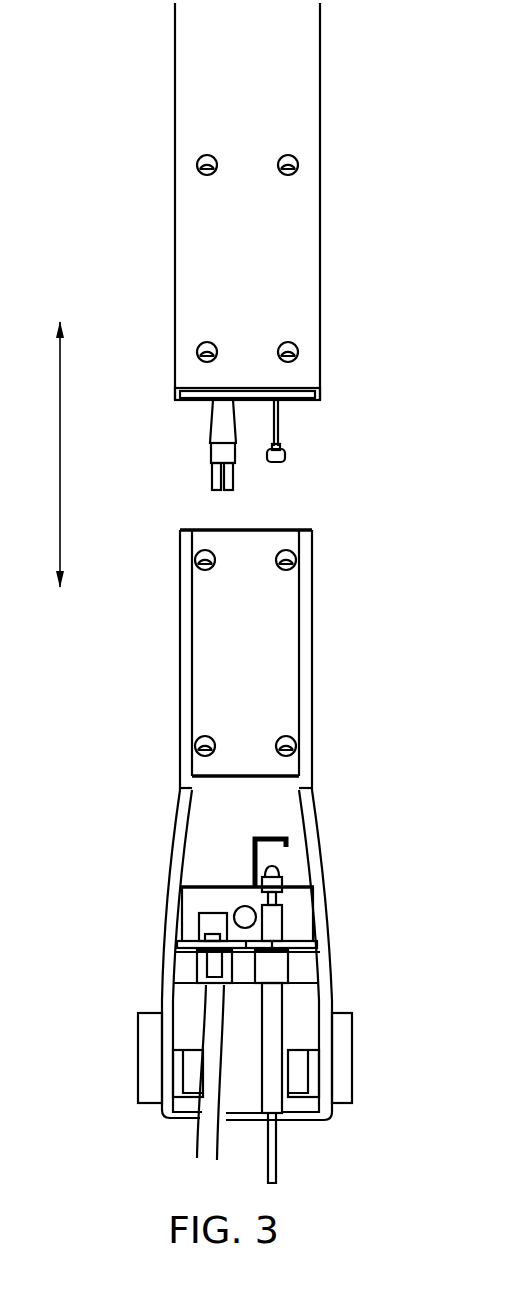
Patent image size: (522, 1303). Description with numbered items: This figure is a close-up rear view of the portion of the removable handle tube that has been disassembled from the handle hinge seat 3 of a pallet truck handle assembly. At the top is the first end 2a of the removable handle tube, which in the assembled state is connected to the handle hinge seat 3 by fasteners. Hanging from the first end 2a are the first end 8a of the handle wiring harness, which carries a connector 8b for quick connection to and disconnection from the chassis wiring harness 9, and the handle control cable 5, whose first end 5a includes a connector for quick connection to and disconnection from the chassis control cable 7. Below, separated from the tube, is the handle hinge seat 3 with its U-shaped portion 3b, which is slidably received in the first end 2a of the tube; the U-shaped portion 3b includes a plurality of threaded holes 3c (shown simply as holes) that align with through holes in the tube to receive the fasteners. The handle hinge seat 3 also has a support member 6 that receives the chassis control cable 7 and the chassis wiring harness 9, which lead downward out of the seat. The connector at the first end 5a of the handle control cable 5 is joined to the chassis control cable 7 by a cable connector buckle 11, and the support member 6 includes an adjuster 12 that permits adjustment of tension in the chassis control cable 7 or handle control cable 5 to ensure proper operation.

The first end of removable handle tube 2a is at (262, 272).
The first end of handle wiring harness 8a is at (227, 425).
The connector 8b is at (236, 478).
The handle control cable 5 is at (281, 428).
The first end of handle control cable 5a is at (287, 455).
The handle hinge seat 3 is at (315, 762).
The U-shaped portion 3b is at (280, 633).
The threaded holes 3c is at (215, 563).
The cable connector buckle 11 is at (272, 837).
The support member 6 is at (295, 898).
The adjuster 12 is at (277, 977).
The chassis wiring harness 9 is at (220, 1097).
The chassis control cable 7 is at (270, 1085).